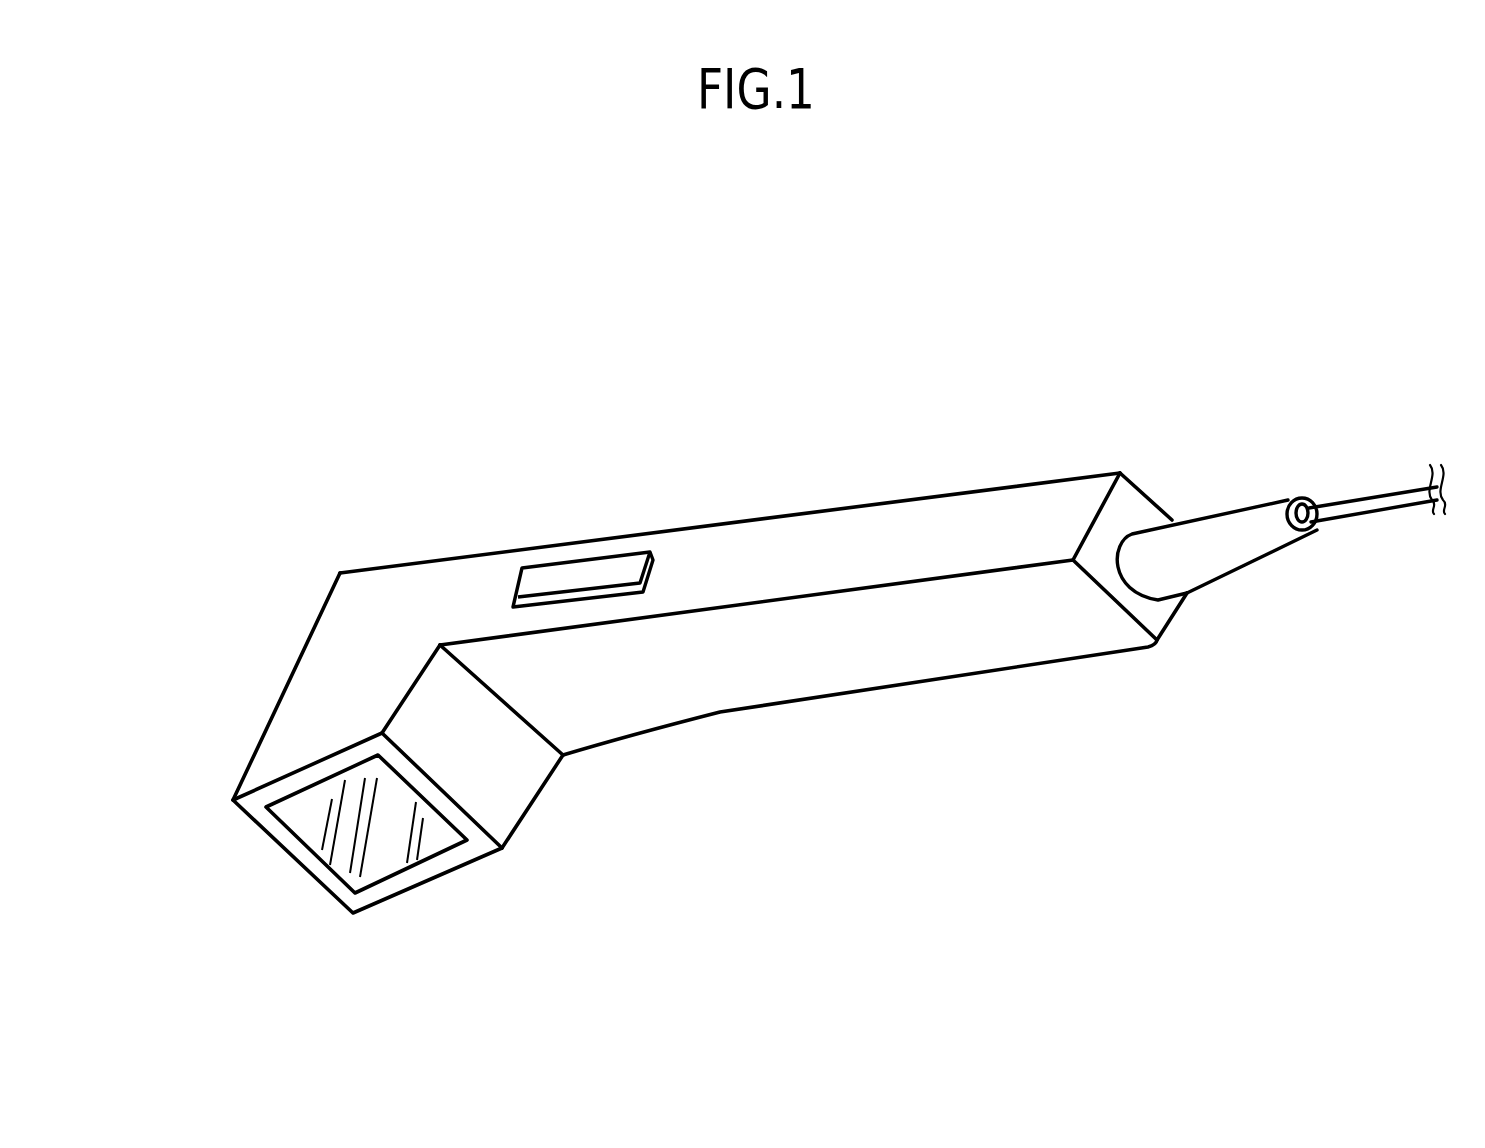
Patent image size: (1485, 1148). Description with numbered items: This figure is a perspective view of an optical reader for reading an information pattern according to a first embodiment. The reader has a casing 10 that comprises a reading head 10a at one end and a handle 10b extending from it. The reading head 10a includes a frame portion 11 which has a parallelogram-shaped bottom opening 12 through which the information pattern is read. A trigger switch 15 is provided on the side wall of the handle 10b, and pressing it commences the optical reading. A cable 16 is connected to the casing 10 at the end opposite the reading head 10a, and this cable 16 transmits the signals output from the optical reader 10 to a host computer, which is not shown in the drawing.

The casing 10 is at (408, 555).
The reading head 10a is at (300, 650).
The handle 10b is at (880, 688).
The frame portion 11 is at (458, 862).
The bottom opening 12 is at (312, 843).
The trigger switch 15 is at (580, 573).
The cable 16 is at (1343, 500).